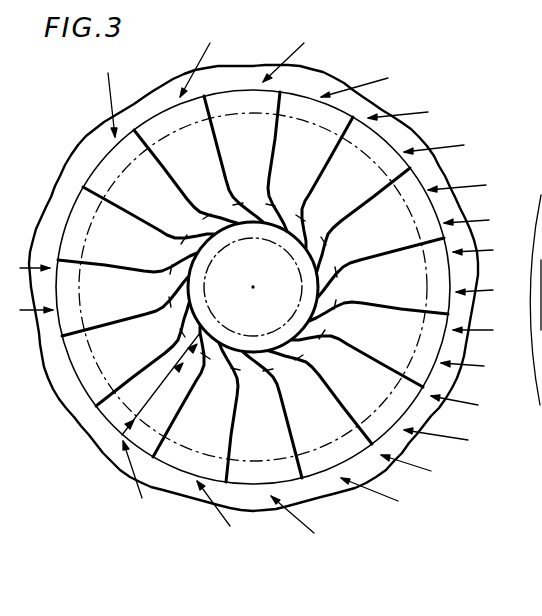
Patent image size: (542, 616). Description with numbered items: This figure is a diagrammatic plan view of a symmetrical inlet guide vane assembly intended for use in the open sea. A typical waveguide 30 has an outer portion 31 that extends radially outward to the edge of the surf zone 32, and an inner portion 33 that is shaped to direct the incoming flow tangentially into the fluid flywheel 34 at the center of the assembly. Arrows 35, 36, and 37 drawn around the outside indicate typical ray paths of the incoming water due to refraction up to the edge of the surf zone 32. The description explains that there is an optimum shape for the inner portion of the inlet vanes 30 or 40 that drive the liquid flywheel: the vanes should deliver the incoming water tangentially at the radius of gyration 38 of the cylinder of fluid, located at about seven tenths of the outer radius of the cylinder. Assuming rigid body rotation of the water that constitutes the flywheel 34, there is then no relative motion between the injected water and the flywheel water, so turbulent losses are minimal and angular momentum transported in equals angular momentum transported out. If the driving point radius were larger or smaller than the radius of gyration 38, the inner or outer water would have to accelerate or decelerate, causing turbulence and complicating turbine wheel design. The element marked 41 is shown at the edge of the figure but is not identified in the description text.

The waveguide 30 is at (118, 418).
The outer portion 31 is at (178, 418).
The surf zone 32 is at (88, 167).
The inner portion 33 is at (195, 333).
The fluid flywheel 34 is at (264, 318).
The arrow 35 is at (485, 294).
The arrow 36 is at (481, 253).
The arrow 37 is at (482, 218).
The radius of gyration 38 is at (334, 296).
The inlet vane 40 is at (528, 360).
The housing wall 41 is at (541, 411).